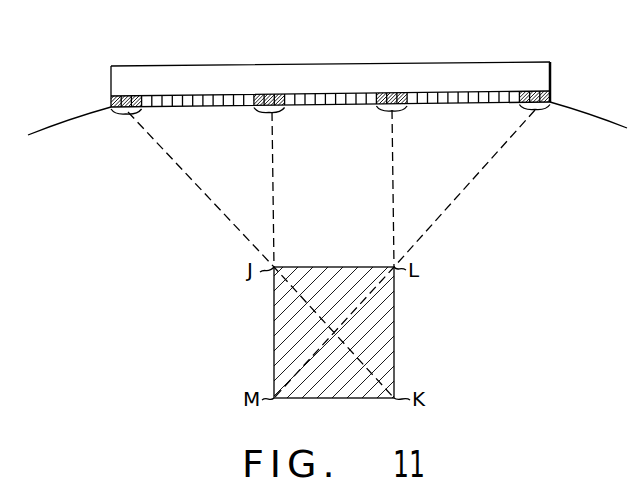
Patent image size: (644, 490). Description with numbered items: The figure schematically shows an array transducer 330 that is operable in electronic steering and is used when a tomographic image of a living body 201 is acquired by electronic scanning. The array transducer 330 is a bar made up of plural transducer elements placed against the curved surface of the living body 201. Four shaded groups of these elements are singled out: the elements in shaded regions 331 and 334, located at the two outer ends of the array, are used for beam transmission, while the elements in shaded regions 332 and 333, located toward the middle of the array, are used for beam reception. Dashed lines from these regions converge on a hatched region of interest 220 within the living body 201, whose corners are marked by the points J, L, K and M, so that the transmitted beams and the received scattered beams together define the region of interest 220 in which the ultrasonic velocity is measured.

The living body 201 is at (603, 119).
The region of interest 220 is at (378, 331).
The array transducer 330 is at (513, 77).
The shaded region 331 is at (126, 114).
The shaded region 332 is at (269, 112).
The shaded region 333 is at (392, 111).
The shaded region 334 is at (535, 110).